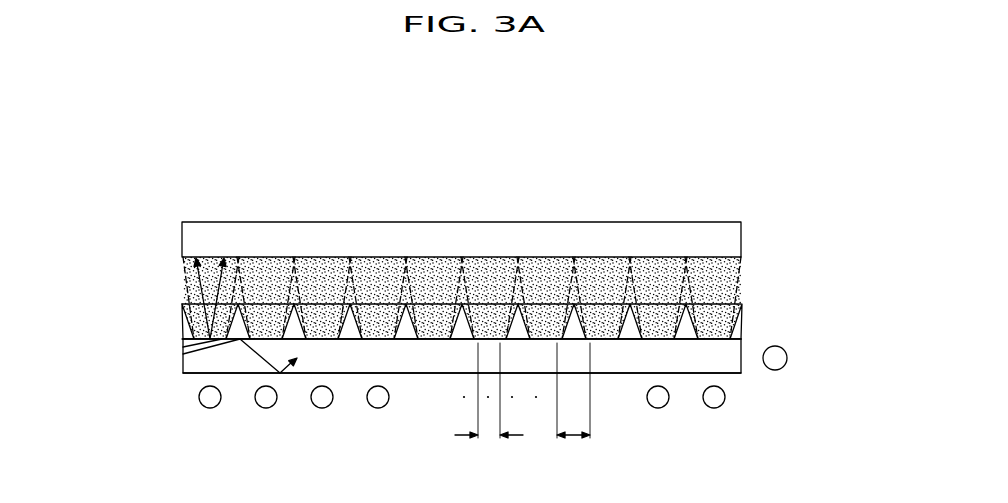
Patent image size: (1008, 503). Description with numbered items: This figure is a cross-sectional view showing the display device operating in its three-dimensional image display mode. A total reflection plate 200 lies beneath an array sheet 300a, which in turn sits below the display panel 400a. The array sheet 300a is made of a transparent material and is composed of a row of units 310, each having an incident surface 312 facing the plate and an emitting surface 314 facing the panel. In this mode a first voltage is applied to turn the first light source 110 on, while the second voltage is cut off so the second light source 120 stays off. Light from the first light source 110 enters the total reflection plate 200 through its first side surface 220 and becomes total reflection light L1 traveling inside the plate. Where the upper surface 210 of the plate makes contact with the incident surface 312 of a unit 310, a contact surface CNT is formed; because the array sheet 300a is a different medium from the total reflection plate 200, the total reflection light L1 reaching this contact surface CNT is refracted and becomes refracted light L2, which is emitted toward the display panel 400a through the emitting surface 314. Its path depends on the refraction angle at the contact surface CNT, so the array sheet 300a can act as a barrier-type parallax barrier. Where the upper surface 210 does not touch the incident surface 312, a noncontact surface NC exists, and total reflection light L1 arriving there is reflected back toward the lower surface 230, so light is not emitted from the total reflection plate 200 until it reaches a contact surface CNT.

The display panel 400a is at (741, 240).
The array sheet 300a is at (521, 300).
The unit 310 is at (521, 301).
The emitting surface 314 is at (718, 305).
The incident surface 312 is at (718, 338).
The total reflection plate 200 is at (397, 342).
The upper surface 210 is at (183, 339).
The first side surface 220 is at (183, 345).
The lower surface 230 is at (419, 385).
The first light source 110 is at (775, 370).
The second light source 120 is at (712, 408).
The total reflection light L1 is at (281, 356).
The refracted light L2 is at (190, 283).
The contact surface CNT is at (489, 405).
The noncontact surface NC is at (573, 405).